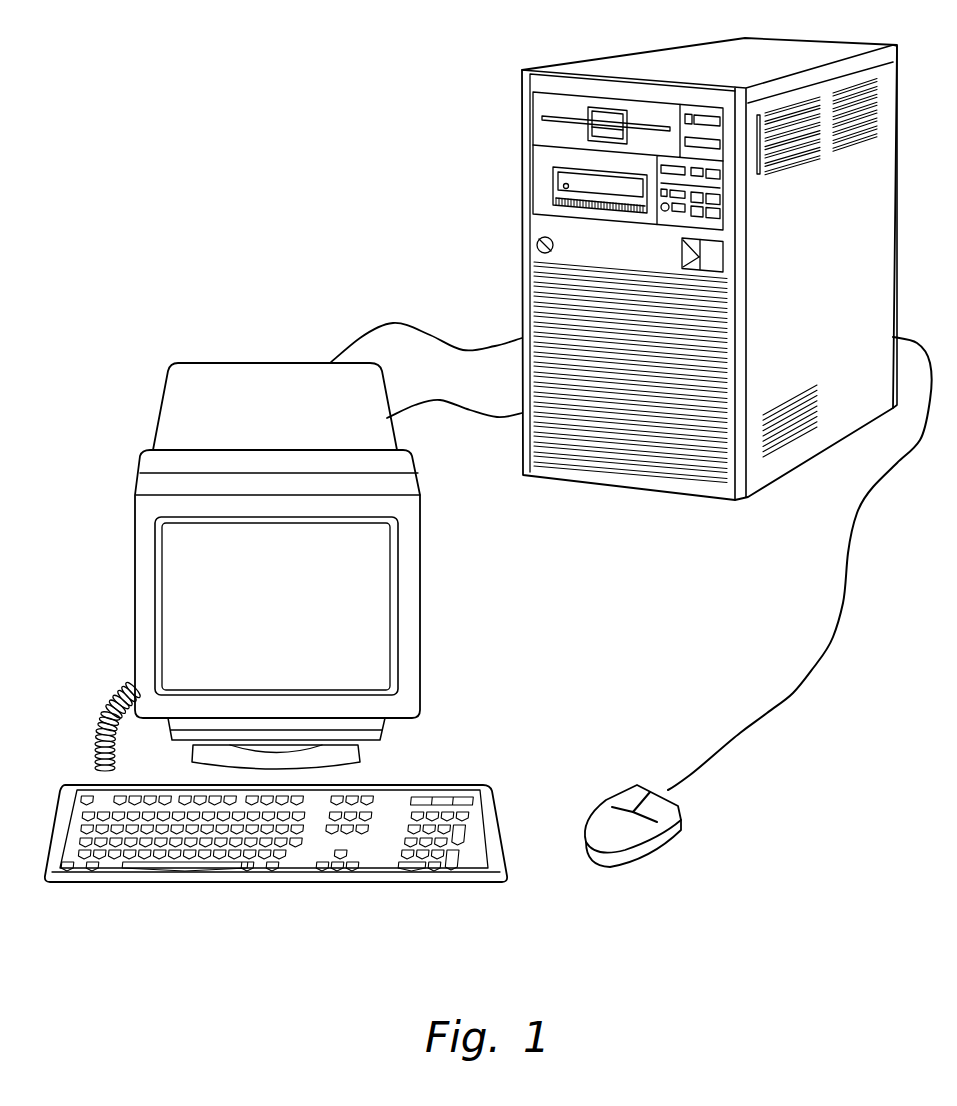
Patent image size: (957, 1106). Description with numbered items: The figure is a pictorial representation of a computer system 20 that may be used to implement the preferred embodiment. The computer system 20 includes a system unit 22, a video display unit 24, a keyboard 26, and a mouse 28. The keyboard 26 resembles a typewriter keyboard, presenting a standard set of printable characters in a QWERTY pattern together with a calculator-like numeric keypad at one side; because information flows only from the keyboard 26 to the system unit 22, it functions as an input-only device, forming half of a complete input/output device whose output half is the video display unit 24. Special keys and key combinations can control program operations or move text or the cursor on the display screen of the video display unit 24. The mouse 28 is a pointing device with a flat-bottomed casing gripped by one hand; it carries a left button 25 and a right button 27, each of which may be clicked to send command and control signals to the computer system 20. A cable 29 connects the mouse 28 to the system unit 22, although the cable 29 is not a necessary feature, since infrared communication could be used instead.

The computer system 20 is at (280, 200).
The system unit 22 is at (523, 222).
The video display unit 24 is at (258, 375).
The left button 25 is at (630, 803).
The keyboard 26 is at (188, 883).
The right button 27 is at (680, 807).
The mouse 28 is at (632, 857).
The cable 29 is at (817, 663).